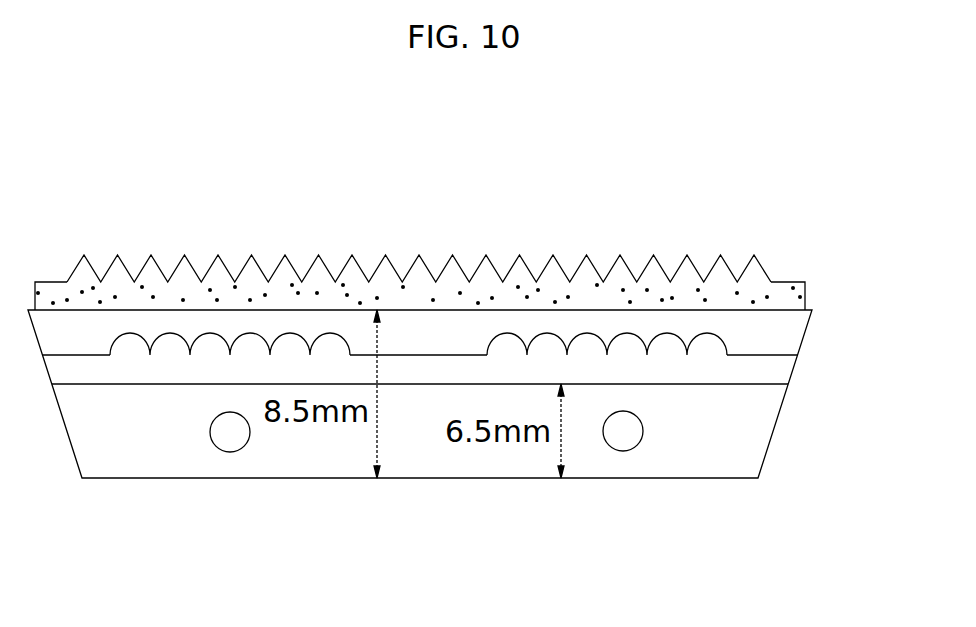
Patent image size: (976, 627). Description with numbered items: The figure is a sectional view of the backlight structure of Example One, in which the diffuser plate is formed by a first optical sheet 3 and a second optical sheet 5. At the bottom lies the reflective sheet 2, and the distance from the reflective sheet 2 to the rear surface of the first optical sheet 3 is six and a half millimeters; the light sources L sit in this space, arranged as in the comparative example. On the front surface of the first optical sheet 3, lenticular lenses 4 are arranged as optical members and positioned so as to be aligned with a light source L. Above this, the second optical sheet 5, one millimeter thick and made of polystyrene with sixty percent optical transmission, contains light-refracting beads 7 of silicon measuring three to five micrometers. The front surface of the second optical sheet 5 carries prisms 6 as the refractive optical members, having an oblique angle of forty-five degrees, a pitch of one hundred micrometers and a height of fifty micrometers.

The reflective sheet 2 is at (760, 478).
The first optical sheet 3 is at (785, 366).
The lenticular lenses 4 is at (665, 350).
The second optical sheet 5 is at (807, 282).
The prisms 6 is at (737, 265).
The light-refracting beads 7 is at (510, 292).
The light source L is at (617, 440).